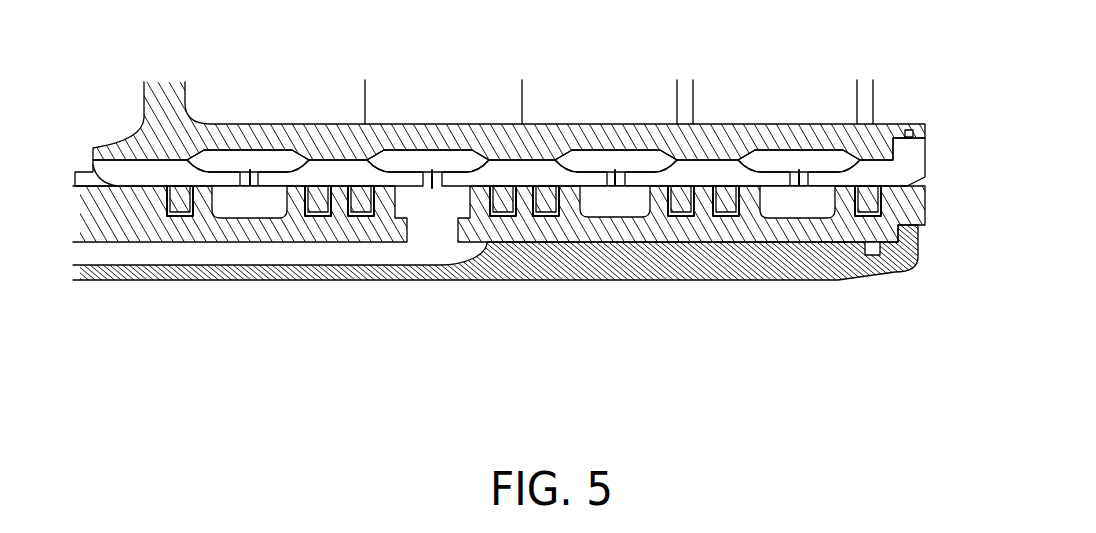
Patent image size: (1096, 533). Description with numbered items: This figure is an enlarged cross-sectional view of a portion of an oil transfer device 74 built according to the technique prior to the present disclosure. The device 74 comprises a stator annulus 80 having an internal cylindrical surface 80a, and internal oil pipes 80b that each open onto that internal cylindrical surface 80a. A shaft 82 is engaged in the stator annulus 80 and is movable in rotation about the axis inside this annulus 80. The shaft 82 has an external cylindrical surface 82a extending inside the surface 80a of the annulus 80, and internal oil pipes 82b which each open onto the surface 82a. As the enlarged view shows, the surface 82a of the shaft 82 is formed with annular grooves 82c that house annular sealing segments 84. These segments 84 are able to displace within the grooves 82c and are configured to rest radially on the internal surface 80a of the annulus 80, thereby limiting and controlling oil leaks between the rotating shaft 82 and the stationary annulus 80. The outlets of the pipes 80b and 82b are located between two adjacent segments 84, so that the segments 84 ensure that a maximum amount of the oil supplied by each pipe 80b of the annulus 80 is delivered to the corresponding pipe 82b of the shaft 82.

The oil transfer device 74 is at (214, 326).
The stator annulus 80 is at (880, 128).
The internal cylindrical surface 80a is at (578, 200).
The internal oil pipes 80b is at (400, 158).
The shaft 82 is at (916, 266).
The external cylindrical surface 82a is at (500, 180).
The internal oil pipes 82b is at (402, 218).
The annular grooves 82c is at (500, 182).
The annular sealing segments 84 is at (500, 180).